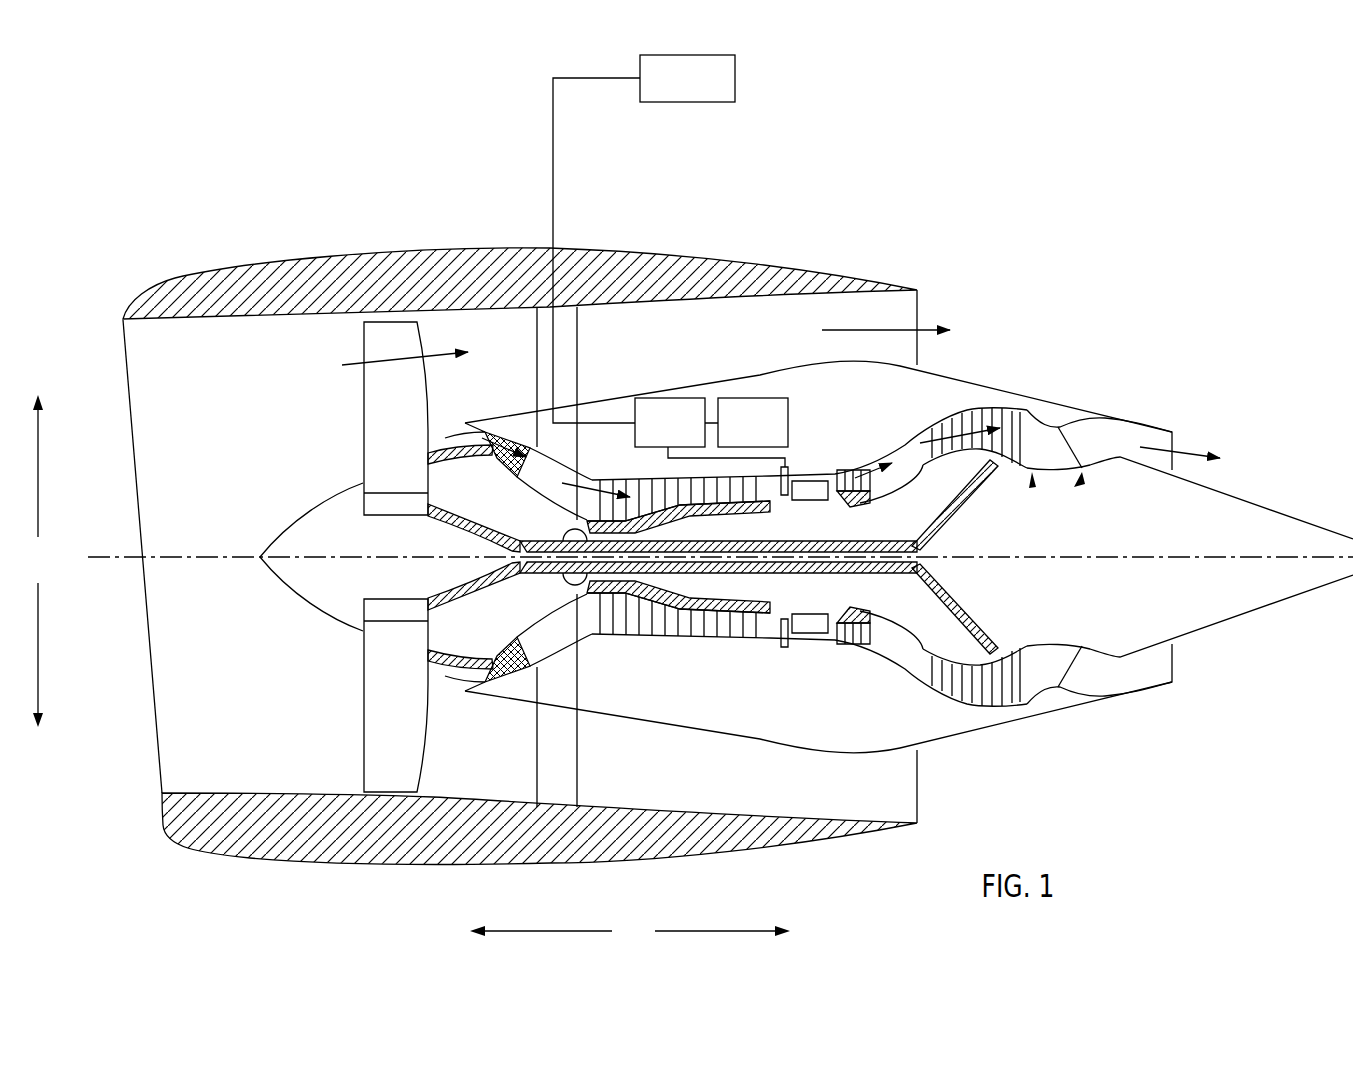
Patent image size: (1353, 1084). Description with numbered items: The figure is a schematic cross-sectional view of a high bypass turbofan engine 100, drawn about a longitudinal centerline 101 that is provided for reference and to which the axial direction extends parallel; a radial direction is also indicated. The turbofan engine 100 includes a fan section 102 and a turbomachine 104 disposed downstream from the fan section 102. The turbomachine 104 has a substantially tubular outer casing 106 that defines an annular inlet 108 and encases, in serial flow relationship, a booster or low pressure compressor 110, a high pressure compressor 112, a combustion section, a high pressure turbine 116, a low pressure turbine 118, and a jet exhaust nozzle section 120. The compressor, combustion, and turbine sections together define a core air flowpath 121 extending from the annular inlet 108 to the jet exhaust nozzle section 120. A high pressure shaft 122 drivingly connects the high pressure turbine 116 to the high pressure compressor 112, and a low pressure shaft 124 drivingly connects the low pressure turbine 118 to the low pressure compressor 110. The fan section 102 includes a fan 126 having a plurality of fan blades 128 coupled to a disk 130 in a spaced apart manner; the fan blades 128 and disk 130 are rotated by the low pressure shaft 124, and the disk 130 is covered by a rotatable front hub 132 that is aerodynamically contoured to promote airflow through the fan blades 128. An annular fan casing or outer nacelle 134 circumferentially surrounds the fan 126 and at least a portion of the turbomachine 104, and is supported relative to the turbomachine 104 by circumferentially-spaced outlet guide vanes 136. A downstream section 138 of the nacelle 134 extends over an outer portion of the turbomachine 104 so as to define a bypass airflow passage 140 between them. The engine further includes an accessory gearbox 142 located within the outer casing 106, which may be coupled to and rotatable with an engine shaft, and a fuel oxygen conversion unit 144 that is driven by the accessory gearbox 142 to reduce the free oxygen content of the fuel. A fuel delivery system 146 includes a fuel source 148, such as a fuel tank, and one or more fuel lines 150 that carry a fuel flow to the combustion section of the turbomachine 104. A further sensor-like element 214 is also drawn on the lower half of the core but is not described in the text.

The turbofan engine 100 is at (1080, 255).
The longitudinal centerline 101 is at (1135, 555).
The fan section 102 is at (276, 500).
The turbomachine 104 is at (890, 498).
The outer casing 106 is at (760, 742).
The annular inlet 108 is at (486, 676).
The low pressure compressor 110 is at (514, 693).
The high pressure compressor 112 is at (614, 636).
The high pressure turbine 116 is at (874, 637).
The low pressure turbine 118 is at (1010, 702).
The jet exhaust nozzle section 120 is at (1077, 682).
The core air flowpath 121 is at (611, 623).
The high pressure shaft 122 is at (807, 525).
The low pressure shaft 124 is at (865, 545).
The fan 126 is at (318, 557).
The fan blades 128 is at (358, 727).
The disk 130 is at (380, 505).
The front hub 132 is at (152, 629).
The outer nacelle 134 is at (420, 862).
The outlet guide vanes 136 is at (577, 340).
The downstream section of the nacelle 138 is at (833, 280).
The bypass airflow passage 140 is at (763, 341).
The accessory gearbox 142 is at (737, 438).
The fuel oxygen conversion unit 144 is at (654, 438).
The fuel delivery system 146 is at (585, 261).
The fuel source 148 is at (671, 94).
The fuel lines 150 is at (553, 196).
The sensor 214 is at (802, 630).